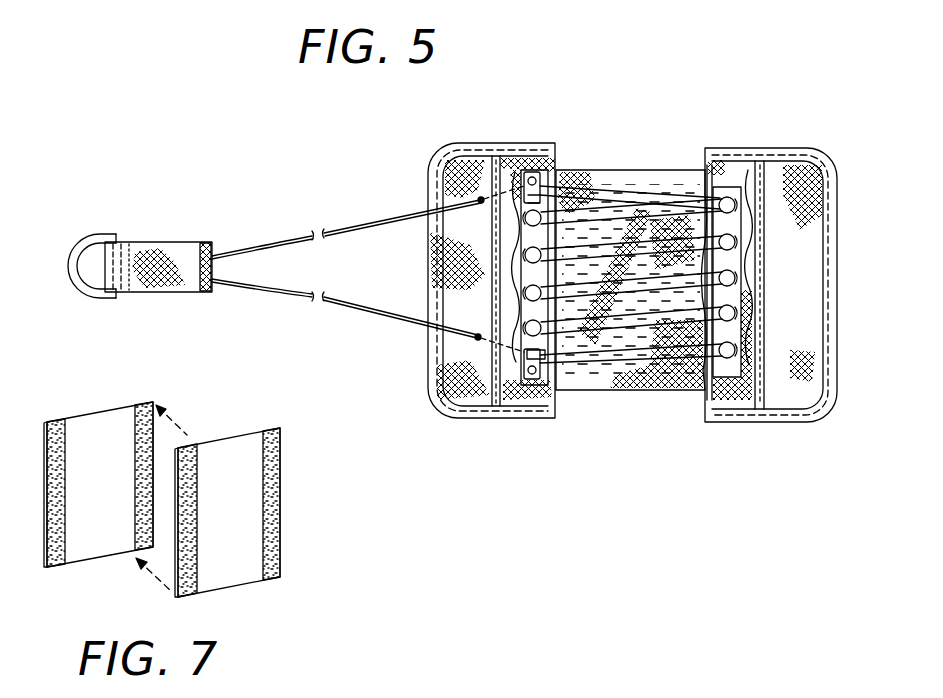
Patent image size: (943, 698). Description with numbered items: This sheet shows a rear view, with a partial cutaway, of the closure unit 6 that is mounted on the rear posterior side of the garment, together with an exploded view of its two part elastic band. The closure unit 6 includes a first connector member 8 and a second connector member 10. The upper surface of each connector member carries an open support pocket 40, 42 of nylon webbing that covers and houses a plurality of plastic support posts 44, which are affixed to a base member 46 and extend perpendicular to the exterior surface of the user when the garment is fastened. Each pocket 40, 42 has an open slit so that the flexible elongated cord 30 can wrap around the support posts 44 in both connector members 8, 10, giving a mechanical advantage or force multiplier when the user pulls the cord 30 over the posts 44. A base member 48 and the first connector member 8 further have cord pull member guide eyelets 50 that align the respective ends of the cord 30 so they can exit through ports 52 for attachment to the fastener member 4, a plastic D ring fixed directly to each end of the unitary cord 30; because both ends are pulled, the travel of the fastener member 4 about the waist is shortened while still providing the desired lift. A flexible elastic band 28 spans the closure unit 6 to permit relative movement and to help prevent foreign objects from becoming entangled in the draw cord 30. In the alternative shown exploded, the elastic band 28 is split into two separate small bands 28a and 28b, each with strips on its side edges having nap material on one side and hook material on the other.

In FIG. 5, the fastener member 4 is at (112, 237).
In FIG. 5, the closure unit 6 is at (692, 118).
In FIG. 5, the first connector member 8 is at (503, 130).
In FIG. 5, the second connector member 10 is at (770, 152).
In FIG. 5, the flexible elastic band 28 is at (636, 345).
In FIG. 7, the elastic band 28a is at (93, 420).
In FIG. 7, the elastic band 28b is at (235, 446).
In FIG. 5, the flexible elongated cord 30 is at (372, 240).
In FIG. 5, the support pocket 40 is at (522, 408).
In FIG. 5, the support pocket 42 is at (734, 405).
In FIG. 5, the support posts 44 is at (540, 252).
In FIG. 5, the base member 46 is at (720, 372).
In FIG. 5, the base member 48 is at (546, 380).
In FIG. 5, the cord pull member guide eyelets 50 is at (575, 150).
In FIG. 5, the ports 52 is at (476, 340).